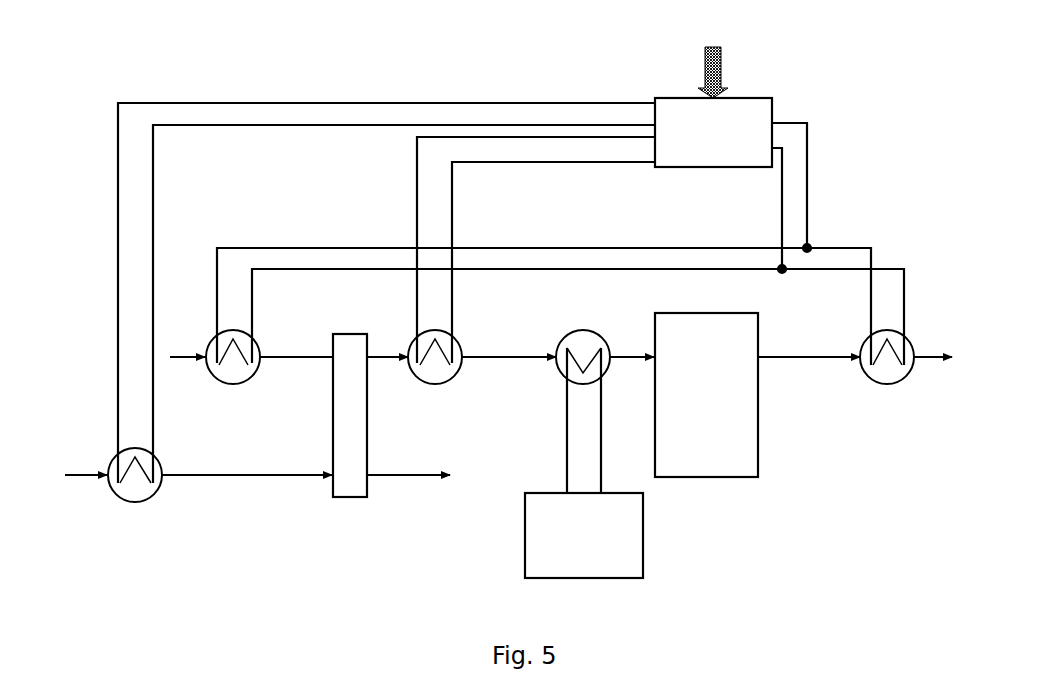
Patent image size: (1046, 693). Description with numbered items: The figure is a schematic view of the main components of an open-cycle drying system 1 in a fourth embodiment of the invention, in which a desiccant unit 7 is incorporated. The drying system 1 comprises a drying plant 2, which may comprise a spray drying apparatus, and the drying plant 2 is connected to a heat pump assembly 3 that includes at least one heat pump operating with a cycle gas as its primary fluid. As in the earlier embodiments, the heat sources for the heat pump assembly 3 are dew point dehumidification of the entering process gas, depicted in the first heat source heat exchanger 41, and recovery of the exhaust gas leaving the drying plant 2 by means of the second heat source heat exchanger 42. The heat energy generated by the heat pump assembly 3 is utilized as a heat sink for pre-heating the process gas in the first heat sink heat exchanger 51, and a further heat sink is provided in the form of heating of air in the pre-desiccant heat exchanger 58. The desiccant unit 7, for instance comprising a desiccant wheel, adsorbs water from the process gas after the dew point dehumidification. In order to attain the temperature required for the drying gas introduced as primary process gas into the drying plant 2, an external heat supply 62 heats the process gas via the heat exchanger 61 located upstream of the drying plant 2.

The fuel cell system 1 is at (192, 75).
The fuel cell stack 2 is at (740, 448).
The burner 3 is at (660, 94).
The humidifier 7 is at (360, 492).
The first heat exchanger 41 is at (222, 340).
The second heat exchanger 42 is at (898, 340).
The third heat exchanger 51 is at (452, 338).
The water heat exchanger 58 is at (113, 455).
The heat exchanger 61 is at (598, 334).
The heat storage unit 62 is at (537, 556).